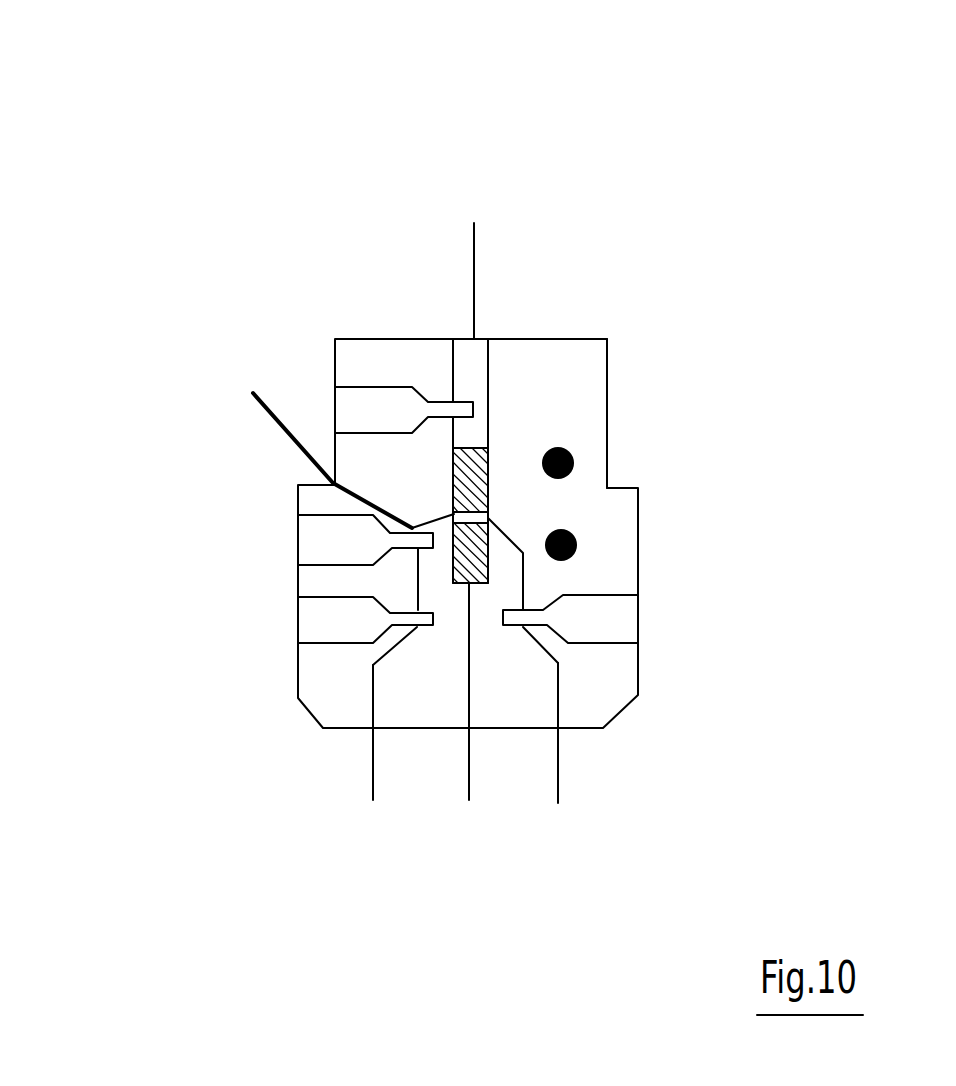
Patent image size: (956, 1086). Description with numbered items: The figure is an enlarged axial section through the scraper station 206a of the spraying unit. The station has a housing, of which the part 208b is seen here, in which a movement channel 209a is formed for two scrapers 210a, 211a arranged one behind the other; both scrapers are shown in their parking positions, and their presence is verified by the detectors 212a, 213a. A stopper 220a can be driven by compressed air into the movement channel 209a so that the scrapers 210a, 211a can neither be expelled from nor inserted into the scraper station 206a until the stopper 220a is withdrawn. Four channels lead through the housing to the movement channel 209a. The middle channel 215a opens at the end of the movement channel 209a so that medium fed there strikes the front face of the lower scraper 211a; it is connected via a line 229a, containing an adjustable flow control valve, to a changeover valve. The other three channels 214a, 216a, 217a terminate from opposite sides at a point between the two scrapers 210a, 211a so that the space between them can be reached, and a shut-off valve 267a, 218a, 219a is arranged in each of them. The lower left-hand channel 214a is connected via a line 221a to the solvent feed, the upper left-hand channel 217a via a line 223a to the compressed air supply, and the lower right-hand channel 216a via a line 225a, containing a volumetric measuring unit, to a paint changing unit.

The scraper station 206a is at (362, 232).
The housing part 208b is at (565, 372).
The movement channel 209a is at (482, 353).
The stopper 220a is at (375, 412).
The line 223a is at (282, 433).
The channel 217a is at (391, 511).
The shut-off valve 219a is at (320, 547).
The shut-off valve 267a is at (330, 620).
The detector 212a is at (573, 465).
The scraper 210a is at (478, 498).
The detector 213a is at (575, 543).
The scraper 211a is at (478, 565).
The shut-off valve 218a is at (612, 623).
The middle channel 215a is at (470, 695).
The channel 214a is at (372, 672).
The channel 216a is at (560, 697).
The line 221a is at (375, 762).
The line 229a is at (468, 760).
The line 225a is at (562, 760).